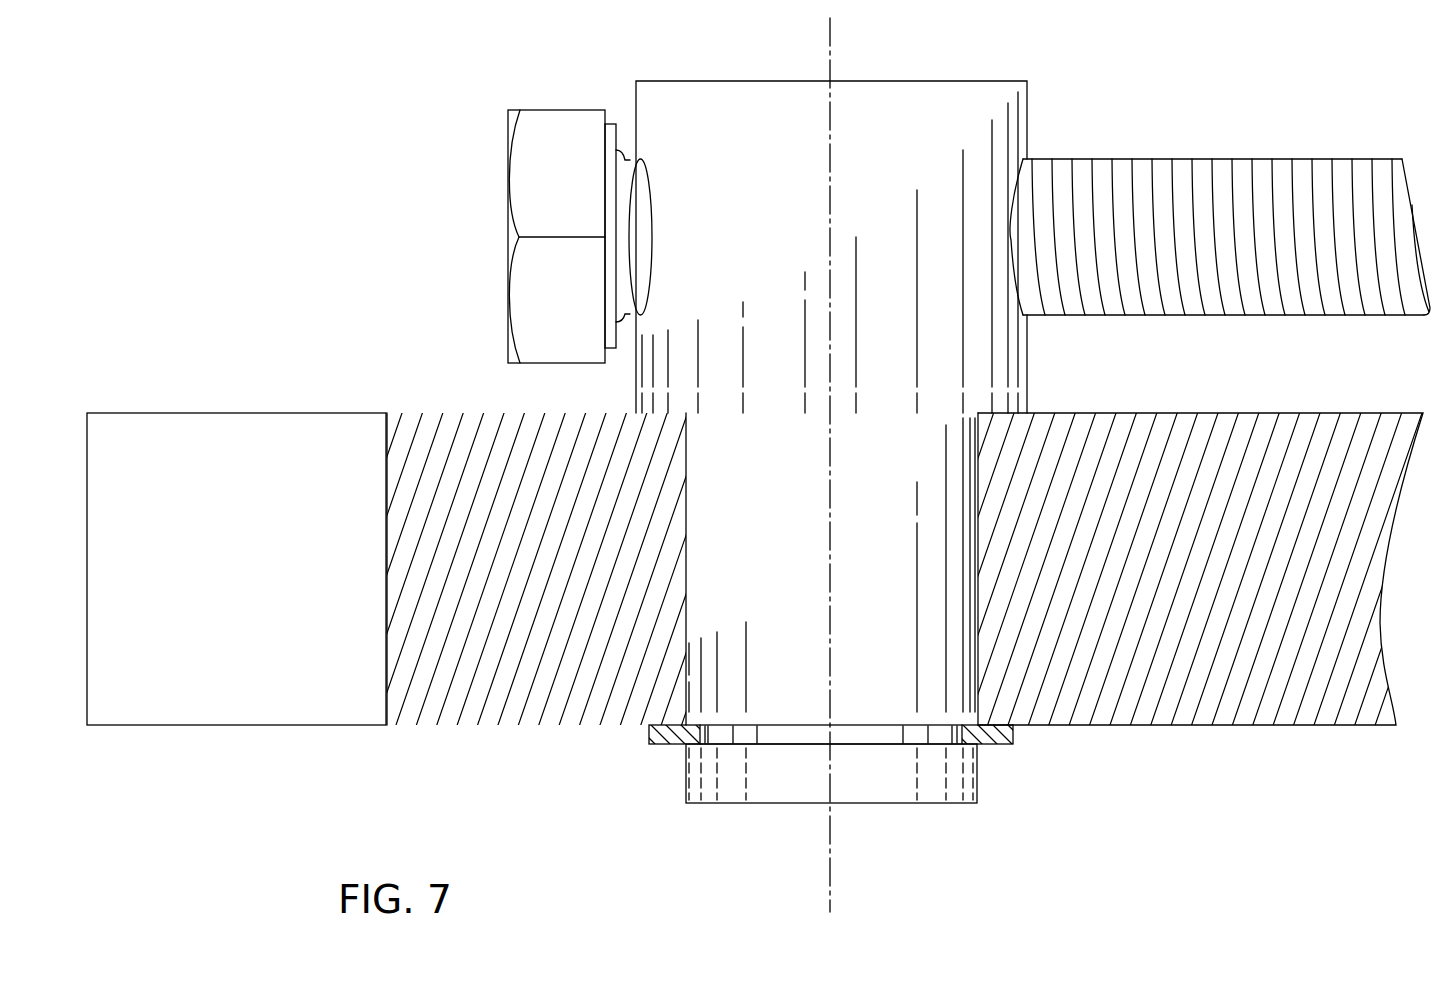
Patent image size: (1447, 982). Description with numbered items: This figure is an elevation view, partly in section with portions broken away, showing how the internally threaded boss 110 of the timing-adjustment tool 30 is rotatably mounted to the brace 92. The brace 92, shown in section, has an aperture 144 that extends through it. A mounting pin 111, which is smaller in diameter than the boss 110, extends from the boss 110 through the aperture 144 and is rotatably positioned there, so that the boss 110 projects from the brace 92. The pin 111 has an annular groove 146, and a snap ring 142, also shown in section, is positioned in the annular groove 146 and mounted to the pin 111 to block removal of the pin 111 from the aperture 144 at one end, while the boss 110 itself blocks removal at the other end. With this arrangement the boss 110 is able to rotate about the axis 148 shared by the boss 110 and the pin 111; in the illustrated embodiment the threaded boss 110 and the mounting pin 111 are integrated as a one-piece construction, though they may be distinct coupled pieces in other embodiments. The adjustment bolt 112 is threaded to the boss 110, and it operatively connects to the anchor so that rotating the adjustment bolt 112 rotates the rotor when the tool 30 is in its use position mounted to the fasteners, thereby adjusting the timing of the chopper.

The timing-adjustment tool 30 is at (273, 93).
The brace 92 is at (182, 685).
The internally threaded boss 110 is at (897, 143).
The mounting pin 111 is at (868, 772).
The adjustment bolt 112 is at (1123, 159).
The snap ring 142 is at (995, 735).
The aperture 144 is at (978, 450).
The annular groove 146 is at (857, 740).
The axis 148 is at (832, 533).